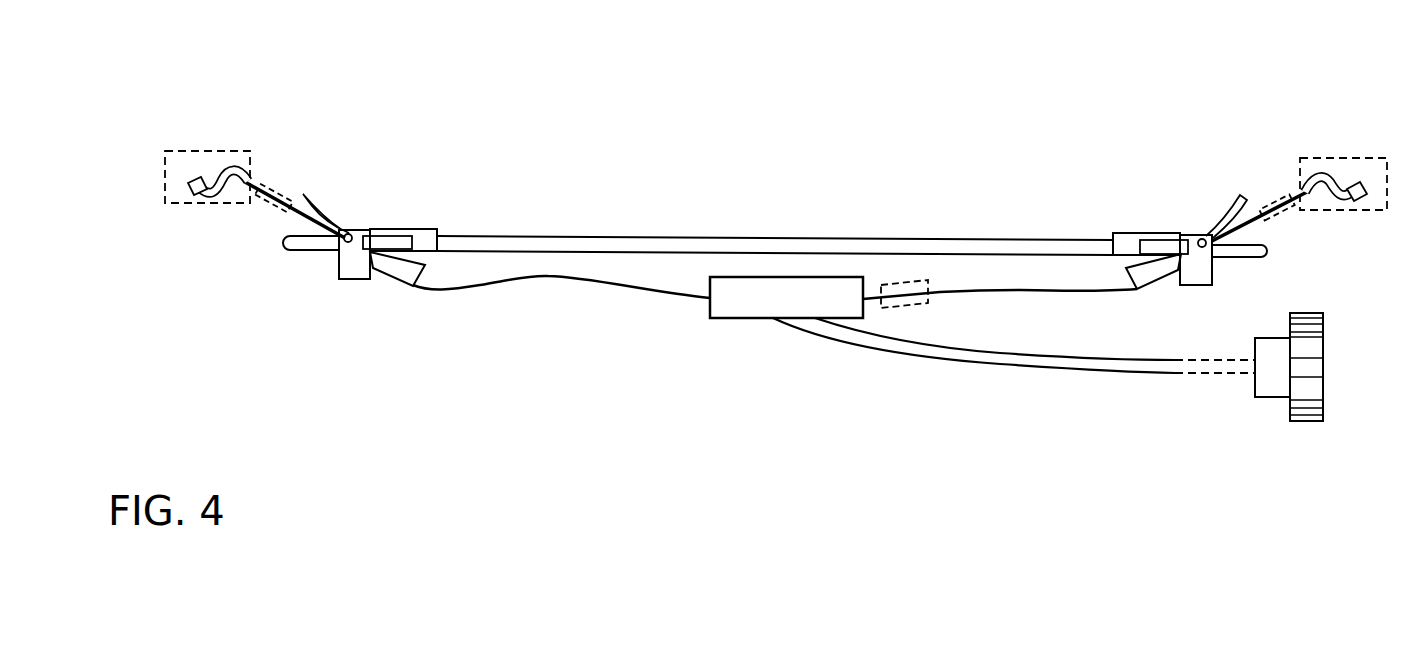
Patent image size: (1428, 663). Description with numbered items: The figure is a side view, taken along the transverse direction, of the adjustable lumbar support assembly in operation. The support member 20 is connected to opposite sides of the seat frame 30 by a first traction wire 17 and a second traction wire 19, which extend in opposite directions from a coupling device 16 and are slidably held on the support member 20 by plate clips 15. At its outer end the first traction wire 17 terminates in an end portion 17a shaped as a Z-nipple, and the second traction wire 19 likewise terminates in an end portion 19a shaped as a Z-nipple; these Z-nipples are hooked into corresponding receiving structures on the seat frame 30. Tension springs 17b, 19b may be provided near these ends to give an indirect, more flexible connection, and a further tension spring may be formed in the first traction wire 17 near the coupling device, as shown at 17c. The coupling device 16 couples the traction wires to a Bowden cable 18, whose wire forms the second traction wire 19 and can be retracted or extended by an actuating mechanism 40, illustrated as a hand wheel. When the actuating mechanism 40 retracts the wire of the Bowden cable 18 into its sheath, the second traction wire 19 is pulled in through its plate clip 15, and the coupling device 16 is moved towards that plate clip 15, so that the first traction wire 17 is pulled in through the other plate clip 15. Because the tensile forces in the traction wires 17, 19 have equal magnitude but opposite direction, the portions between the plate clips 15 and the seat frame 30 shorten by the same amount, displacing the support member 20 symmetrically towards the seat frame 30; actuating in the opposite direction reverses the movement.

The plate clip 15 is at (355, 269).
The coupling device 16 is at (731, 311).
The first traction wire 17 is at (1020, 290).
The end portion 17a is at (1355, 193).
The tension spring 17b is at (1268, 203).
The tension spring 17c is at (892, 308).
The Bowden cable 18 is at (1044, 363).
The second traction wire 19 is at (548, 276).
The end portion 19a is at (197, 188).
The tension spring 19b is at (282, 198).
The support member 20 is at (866, 176).
The seat frame 30 is at (196, 151).
The actuating mechanism 40 is at (1270, 389).